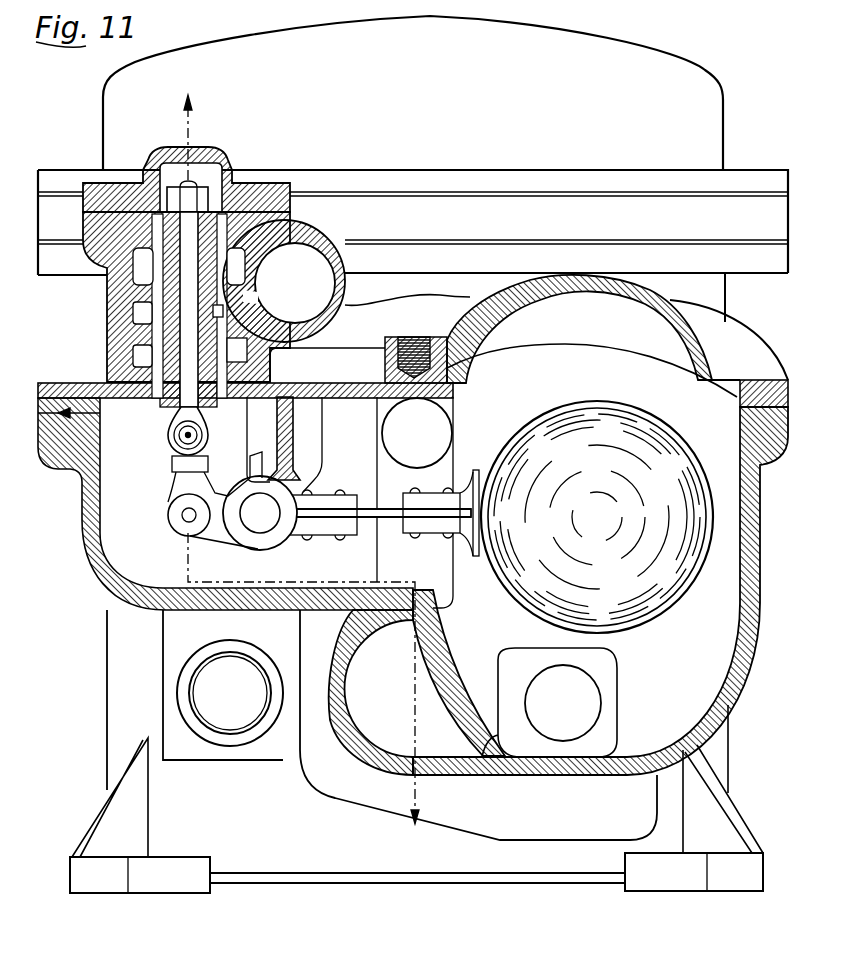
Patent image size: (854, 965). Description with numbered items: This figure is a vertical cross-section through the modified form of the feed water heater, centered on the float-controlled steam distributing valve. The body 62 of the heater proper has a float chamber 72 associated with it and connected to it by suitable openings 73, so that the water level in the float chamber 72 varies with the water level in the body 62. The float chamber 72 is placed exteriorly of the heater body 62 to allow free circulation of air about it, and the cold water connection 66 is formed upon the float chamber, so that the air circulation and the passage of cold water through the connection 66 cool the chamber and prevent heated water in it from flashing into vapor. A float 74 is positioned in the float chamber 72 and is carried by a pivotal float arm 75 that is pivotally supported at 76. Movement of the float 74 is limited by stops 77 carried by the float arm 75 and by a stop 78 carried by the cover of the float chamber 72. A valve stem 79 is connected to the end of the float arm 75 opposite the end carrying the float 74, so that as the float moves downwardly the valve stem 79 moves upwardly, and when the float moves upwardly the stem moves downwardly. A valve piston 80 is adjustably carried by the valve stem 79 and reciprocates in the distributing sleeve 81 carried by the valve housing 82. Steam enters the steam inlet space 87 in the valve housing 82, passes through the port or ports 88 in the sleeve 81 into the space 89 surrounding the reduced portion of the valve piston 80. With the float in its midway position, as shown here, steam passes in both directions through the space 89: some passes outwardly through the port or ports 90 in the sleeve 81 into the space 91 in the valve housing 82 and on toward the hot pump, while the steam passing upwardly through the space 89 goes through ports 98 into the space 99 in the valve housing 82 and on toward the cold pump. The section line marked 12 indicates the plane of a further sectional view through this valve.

The section line 12- 12 is at (302, 465).
The body 62 is at (720, 284).
The cold water connection 66 is at (364, 716).
The float chamber 72 is at (730, 545).
The openings 73 is at (440, 412).
The float 74 is at (670, 433).
The float arm 75 is at (370, 518).
The pivot 76 is at (260, 515).
The stops 77 is at (250, 447).
The stop 78 is at (288, 430).
The valve stem 79 is at (195, 402).
The valve piston 80 is at (153, 413).
The distributing sleeve 81 is at (147, 231).
The valve housing 82 is at (290, 218).
The steam inlet space 87 is at (346, 268).
The ports 88 is at (224, 308).
The space 89 is at (317, 280).
The ports 90 is at (247, 353).
The space 91 is at (145, 352).
The ports 98 is at (258, 276).
The space 99 is at (147, 273).